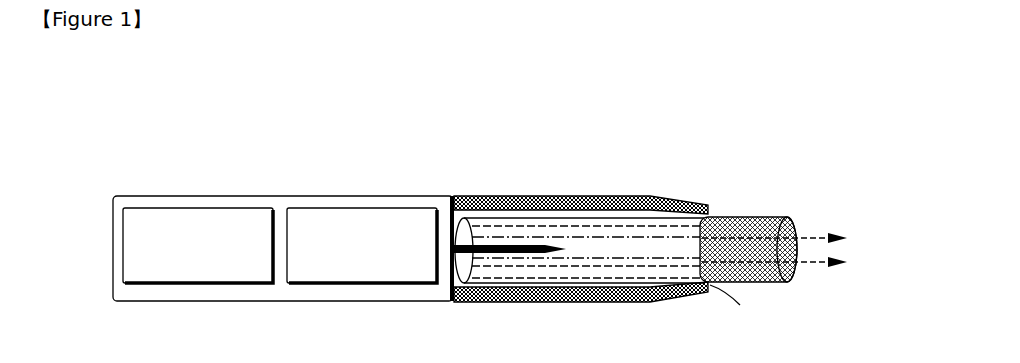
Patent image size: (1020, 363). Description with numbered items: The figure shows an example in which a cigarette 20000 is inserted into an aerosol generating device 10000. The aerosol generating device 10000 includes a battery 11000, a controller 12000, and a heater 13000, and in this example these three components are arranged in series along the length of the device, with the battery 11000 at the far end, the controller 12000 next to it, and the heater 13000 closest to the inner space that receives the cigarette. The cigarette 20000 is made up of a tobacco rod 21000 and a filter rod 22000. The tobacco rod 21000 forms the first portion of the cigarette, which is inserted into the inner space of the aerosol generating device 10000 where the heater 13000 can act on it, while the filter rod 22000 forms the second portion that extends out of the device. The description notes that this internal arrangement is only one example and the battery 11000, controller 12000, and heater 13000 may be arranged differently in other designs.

The aerosol generating device 10000 is at (709, 140).
The battery 11000 is at (202, 208).
The controller 12000 is at (363, 208).
The heater 13000 is at (522, 245).
The cigarette 20000 is at (773, 292).
The tobacco rod 21000 is at (613, 213).
The filter rod 22000 is at (778, 218).